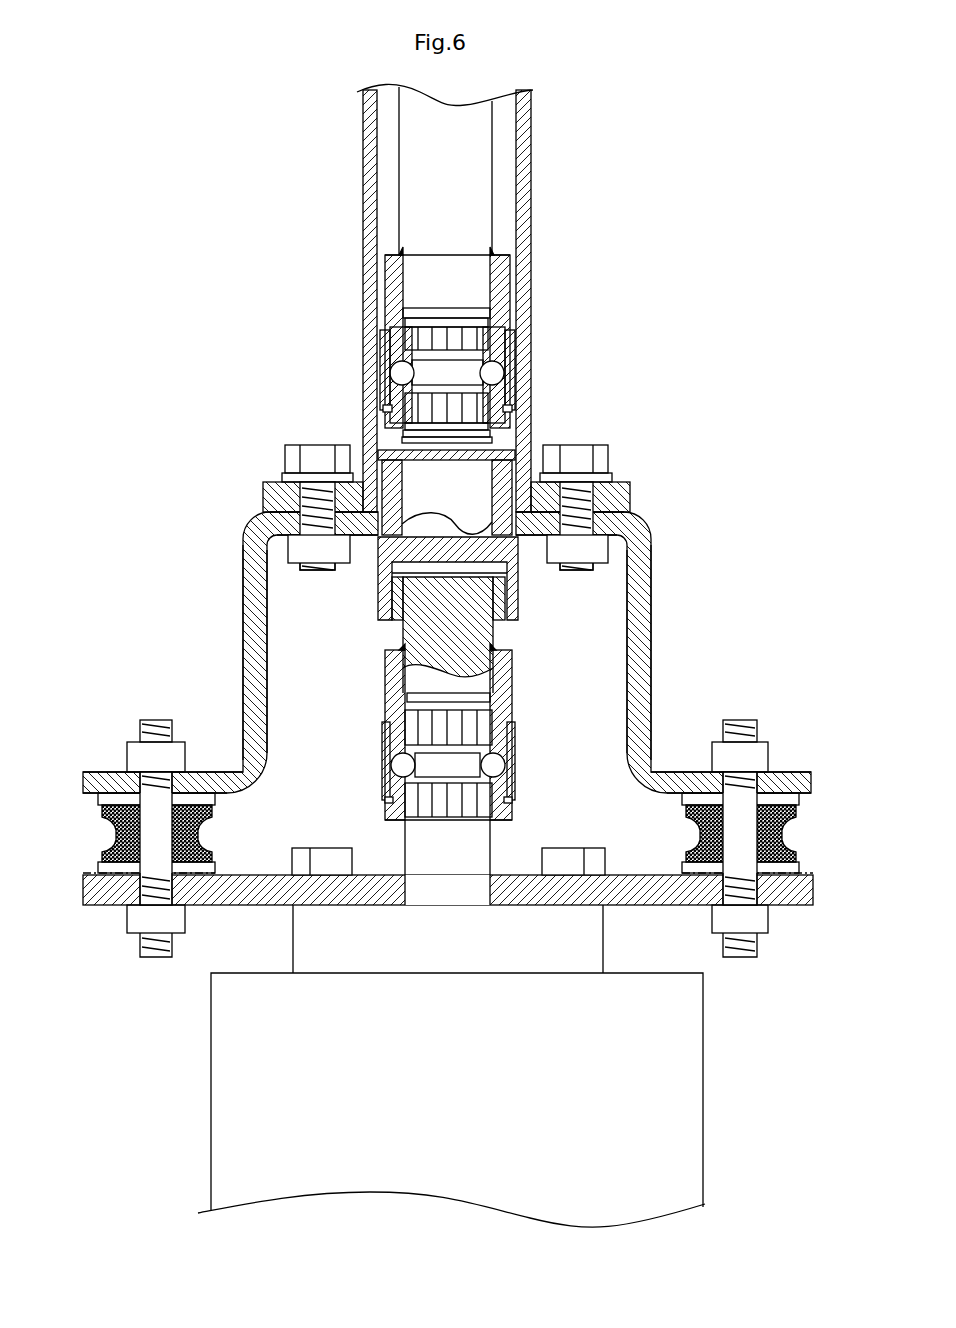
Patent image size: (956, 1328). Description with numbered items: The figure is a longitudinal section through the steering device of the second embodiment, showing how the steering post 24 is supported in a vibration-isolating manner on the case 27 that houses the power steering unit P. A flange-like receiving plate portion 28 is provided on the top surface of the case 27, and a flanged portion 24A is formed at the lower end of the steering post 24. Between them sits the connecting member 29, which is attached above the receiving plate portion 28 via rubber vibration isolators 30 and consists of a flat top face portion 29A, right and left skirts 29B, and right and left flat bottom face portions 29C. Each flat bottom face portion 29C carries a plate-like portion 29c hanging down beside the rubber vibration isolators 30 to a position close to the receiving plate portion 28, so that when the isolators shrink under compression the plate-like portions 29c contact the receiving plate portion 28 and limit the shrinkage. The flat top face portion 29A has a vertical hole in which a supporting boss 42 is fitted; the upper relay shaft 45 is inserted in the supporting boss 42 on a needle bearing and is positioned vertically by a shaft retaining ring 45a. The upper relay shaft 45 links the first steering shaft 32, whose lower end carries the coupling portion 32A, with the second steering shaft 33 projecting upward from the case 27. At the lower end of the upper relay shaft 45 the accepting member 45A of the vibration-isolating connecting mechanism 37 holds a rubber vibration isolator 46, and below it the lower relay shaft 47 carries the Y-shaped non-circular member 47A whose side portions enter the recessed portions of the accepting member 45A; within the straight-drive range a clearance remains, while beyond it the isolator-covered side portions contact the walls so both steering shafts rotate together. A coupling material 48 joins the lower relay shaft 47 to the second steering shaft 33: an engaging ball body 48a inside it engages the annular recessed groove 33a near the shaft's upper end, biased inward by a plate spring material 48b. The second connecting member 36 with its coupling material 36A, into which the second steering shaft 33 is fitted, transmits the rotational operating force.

The steering post 24 is at (408, 298).
The flanged portion 24A is at (275, 485).
The first steering shaft 32 is at (427, 257).
The coupling portion 32A is at (390, 290).
The upper relay shaft 45 is at (440, 335).
The shaft retaining ring 45a is at (365, 443).
The supporting boss 42 is at (510, 470).
The connecting member 29 is at (240, 548).
The flat top face portion 29A is at (632, 522).
The skirt 29B is at (250, 655).
The flat bottom face portion 29C is at (112, 772).
The plate-like portion 29c is at (95, 866).
The rubber vibration isolator 30 is at (115, 834).
The receiving plate portion 28 is at (272, 875).
The vibration-isolating connecting mechanism 37 is at (530, 600).
The accepting member 45A is at (380, 594).
The rubber vibration isolator 46 is at (420, 590).
The lower relay shaft 47 is at (447, 609).
The non-circular member 47A is at (417, 623).
The coupling material 48 is at (456, 757).
The engaging ball body 48a is at (400, 767).
The plate spring material 48b is at (512, 768).
The coupling material 36A is at (515, 815).
The second connecting member 36 is at (525, 740).
The second steering shaft 33 is at (413, 829).
The annular recessed groove 33a is at (448, 810).
The power steering unit P is at (460, 1066).
The case 27 is at (703, 1110).